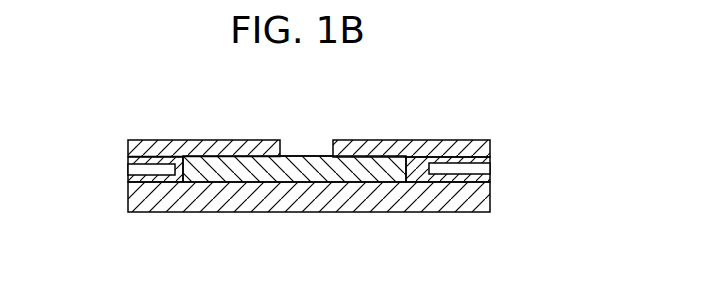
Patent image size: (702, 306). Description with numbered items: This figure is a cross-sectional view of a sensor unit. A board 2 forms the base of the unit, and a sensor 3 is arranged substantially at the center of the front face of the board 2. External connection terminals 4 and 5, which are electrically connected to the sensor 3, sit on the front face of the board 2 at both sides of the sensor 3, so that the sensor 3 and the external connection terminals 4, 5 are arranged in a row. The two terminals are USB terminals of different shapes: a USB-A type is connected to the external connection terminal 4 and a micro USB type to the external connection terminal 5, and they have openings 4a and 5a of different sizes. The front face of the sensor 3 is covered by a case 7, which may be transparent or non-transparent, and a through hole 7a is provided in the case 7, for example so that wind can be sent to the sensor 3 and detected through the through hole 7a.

The board 2 is at (397, 203).
The sensor 3 is at (232, 176).
The external connection terminal 4 is at (420, 160).
The opening 4a is at (492, 169).
The external connection terminal 5 is at (178, 168).
The opening 5a is at (128, 170).
The case 7 is at (224, 152).
The through hole 7a is at (307, 143).